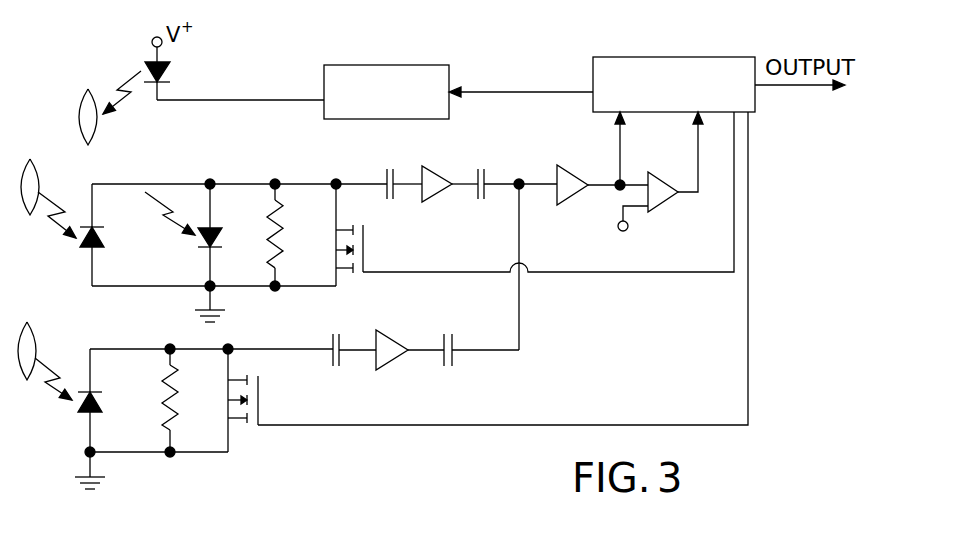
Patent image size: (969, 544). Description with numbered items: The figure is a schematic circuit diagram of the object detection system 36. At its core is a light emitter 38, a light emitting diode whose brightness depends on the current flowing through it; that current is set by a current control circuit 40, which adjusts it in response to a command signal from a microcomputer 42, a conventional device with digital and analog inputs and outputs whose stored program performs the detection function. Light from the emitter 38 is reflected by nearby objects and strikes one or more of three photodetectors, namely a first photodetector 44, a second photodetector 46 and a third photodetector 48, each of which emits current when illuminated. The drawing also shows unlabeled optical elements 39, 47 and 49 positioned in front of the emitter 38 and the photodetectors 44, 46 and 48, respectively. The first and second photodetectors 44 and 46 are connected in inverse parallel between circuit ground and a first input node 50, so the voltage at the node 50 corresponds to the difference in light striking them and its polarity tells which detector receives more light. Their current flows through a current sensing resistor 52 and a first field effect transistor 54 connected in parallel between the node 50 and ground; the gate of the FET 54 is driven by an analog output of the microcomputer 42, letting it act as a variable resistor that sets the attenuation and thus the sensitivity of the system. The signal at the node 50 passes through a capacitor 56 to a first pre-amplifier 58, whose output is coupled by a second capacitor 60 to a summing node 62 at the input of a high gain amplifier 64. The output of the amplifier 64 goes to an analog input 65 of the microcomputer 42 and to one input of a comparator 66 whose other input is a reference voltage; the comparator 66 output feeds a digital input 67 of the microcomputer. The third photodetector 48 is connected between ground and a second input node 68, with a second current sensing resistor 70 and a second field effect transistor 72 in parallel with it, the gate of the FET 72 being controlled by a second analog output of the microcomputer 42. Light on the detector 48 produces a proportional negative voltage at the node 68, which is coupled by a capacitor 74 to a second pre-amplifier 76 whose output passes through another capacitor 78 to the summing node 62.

The object detection system 36 is at (415, 452).
The light emitter 38 is at (148, 63).
The lens 39 is at (96, 132).
The current control circuit 40 is at (395, 65).
The microcomputer 42 is at (650, 57).
The first photodetector 44 is at (82, 248).
The second photodetector 46 is at (200, 250).
The lens 47 is at (38, 178).
The third photodetector 48 is at (80, 412).
The lens 49 is at (30, 327).
The first input node 50 is at (275, 180).
The current sensing resistor 52 is at (283, 250).
The first field effect transistor 54 is at (366, 256).
The capacitor 56 is at (385, 176).
The first pre-amplifier 58 is at (432, 168).
The second capacitor 60 is at (483, 168).
The summing node 62 is at (520, 176).
The high gain amplifier 64 is at (583, 197).
The analog input 65 is at (619, 152).
The comparator 66 is at (673, 173).
The digital input 67 is at (702, 142).
The second input node 68 is at (168, 347).
The second current sensing resistor 70 is at (178, 416).
The second field effect transistor 72 is at (262, 405).
The capacitor 74 is at (333, 345).
The second pre-amplifier 76 is at (385, 368).
The capacitor 78 is at (455, 360).